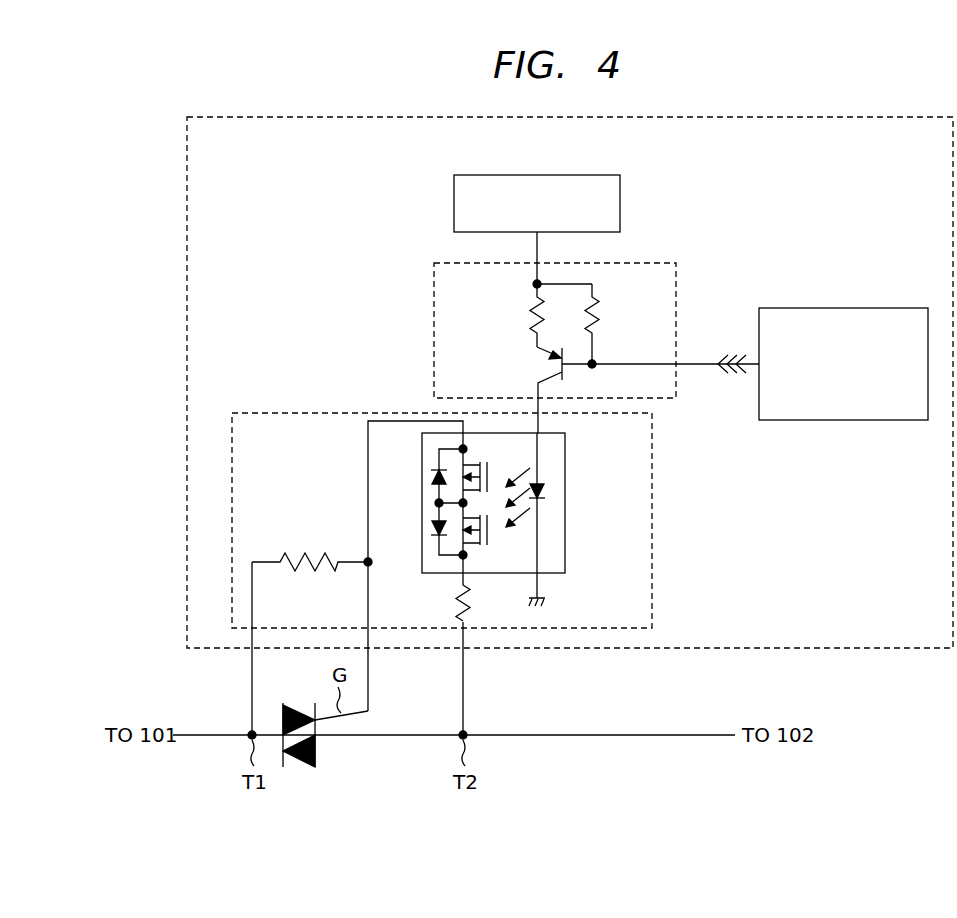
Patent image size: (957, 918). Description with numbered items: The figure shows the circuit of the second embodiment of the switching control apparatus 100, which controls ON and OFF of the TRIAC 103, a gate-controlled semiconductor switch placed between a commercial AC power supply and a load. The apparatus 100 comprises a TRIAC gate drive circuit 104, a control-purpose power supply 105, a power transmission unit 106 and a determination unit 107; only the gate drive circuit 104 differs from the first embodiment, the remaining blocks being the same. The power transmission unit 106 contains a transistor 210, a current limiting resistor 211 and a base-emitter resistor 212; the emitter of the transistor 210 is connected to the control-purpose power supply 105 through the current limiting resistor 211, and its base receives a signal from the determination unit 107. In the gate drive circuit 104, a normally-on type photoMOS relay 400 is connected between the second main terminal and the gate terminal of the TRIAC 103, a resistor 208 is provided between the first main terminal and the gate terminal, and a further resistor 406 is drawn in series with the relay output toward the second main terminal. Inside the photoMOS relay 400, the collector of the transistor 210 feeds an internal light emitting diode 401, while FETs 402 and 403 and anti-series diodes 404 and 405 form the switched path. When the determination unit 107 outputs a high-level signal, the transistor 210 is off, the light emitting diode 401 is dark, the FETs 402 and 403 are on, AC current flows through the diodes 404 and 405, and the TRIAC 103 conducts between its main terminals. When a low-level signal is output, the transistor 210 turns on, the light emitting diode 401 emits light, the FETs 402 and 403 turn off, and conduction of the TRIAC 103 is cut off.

The switching control apparatus 100 is at (866, 117).
The TRIAC 103 is at (300, 767).
The TRIAC gate drive circuit 104 is at (652, 503).
The control-purpose power supply 105 is at (560, 175).
The power transmission unit 106 is at (620, 263).
The determination unit 107 is at (868, 308).
The resistor 208 is at (313, 552).
The transistor 210 is at (544, 367).
The current limiting resistor 211 is at (531, 300).
The base-emitter resistor 212 is at (600, 300).
The photoMOS relay 400 is at (565, 455).
The light emitting diode 401 is at (545, 492).
The FET 402 is at (500, 445).
The FET 403 is at (487, 545).
The diode 404 is at (434, 479).
The diode 405 is at (434, 533).
The resistor 406 is at (456, 602).